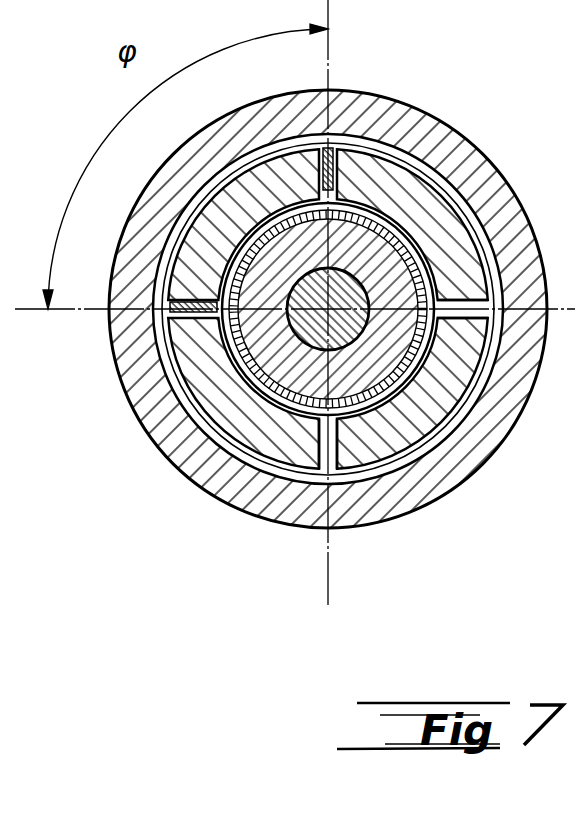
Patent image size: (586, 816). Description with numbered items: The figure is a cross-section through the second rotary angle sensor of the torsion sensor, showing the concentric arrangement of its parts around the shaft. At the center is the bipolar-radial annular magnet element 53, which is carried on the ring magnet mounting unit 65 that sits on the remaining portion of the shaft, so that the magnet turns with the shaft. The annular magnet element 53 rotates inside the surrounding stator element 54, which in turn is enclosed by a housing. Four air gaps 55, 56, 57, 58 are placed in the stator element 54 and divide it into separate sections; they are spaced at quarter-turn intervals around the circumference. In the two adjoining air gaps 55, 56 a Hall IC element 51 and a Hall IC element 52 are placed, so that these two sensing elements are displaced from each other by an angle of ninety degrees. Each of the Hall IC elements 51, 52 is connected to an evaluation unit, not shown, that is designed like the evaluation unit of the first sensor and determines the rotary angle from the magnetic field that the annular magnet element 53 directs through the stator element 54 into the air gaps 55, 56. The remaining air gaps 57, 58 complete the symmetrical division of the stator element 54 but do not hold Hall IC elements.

The Hall IC element 51 is at (193, 292).
The Hall IC element 52 is at (318, 178).
The annular magnet element 53 is at (378, 272).
The stator element 54 is at (243, 427).
The air gap 55 is at (160, 313).
The air gap 56 is at (338, 153).
The air gap 57 is at (510, 312).
The air gap 58 is at (330, 470).
The ring magnet mounting unit 65 is at (418, 282).